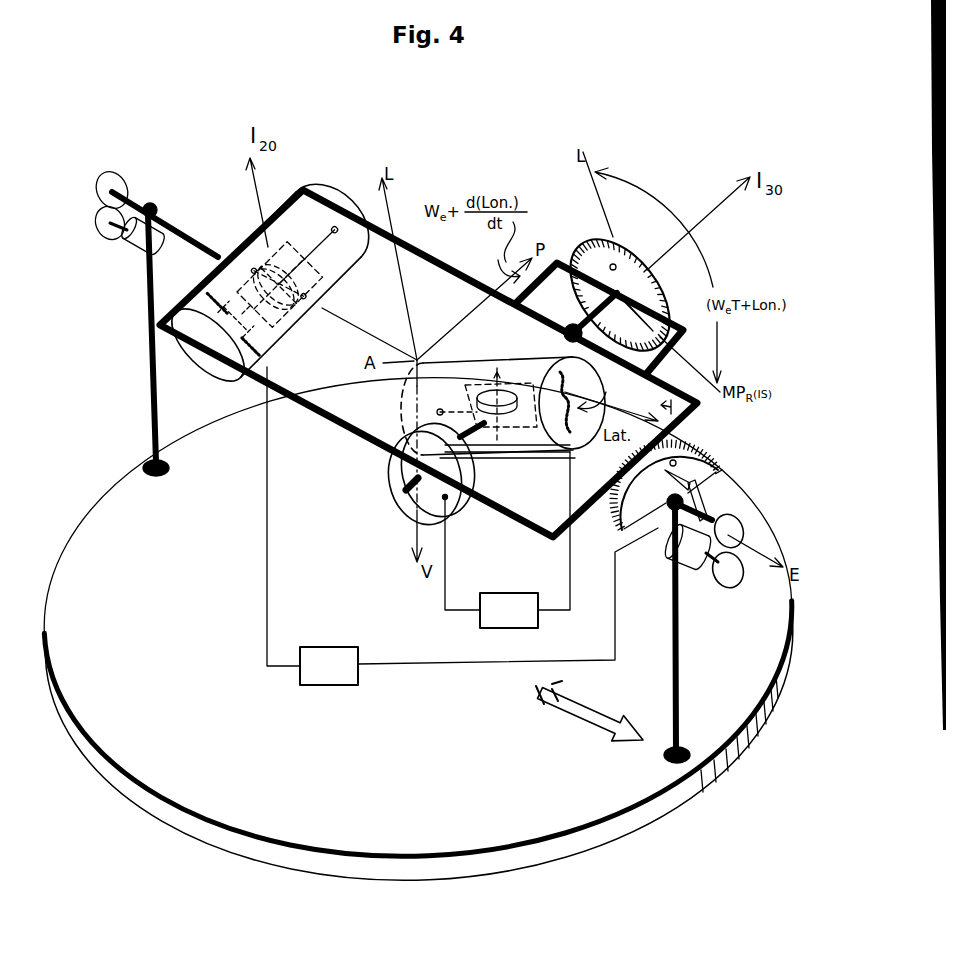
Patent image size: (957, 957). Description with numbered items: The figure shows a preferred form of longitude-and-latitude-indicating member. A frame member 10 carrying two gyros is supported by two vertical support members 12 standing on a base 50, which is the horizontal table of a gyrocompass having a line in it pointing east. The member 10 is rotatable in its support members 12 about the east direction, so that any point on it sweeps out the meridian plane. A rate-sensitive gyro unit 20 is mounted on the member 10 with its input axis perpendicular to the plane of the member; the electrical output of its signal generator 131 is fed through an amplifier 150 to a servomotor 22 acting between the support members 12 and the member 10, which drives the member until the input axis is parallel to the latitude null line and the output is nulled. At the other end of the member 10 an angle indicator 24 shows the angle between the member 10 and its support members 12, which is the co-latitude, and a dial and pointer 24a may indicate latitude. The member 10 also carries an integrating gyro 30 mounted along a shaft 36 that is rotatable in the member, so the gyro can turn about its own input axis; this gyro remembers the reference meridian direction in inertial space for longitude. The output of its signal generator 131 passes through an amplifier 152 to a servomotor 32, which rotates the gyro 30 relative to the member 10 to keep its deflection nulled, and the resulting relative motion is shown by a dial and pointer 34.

The member 10 is at (340, 424).
The support members 12 is at (147, 375).
The gyro unit 20 is at (338, 184).
The servomotor 22 is at (672, 541).
The angle indicator 24 is at (127, 244).
The dial and pointer 24a is at (732, 446).
The integrating gyro 30 is at (522, 455).
The servomotor 32 is at (393, 470).
The dial and pointer 34 is at (729, 268).
The shaft 36 is at (480, 460).
The base 50 is at (190, 795).
The signal generator 131 is at (266, 326).
The amplifier 150 is at (338, 648).
The amplifier 152 is at (523, 594).